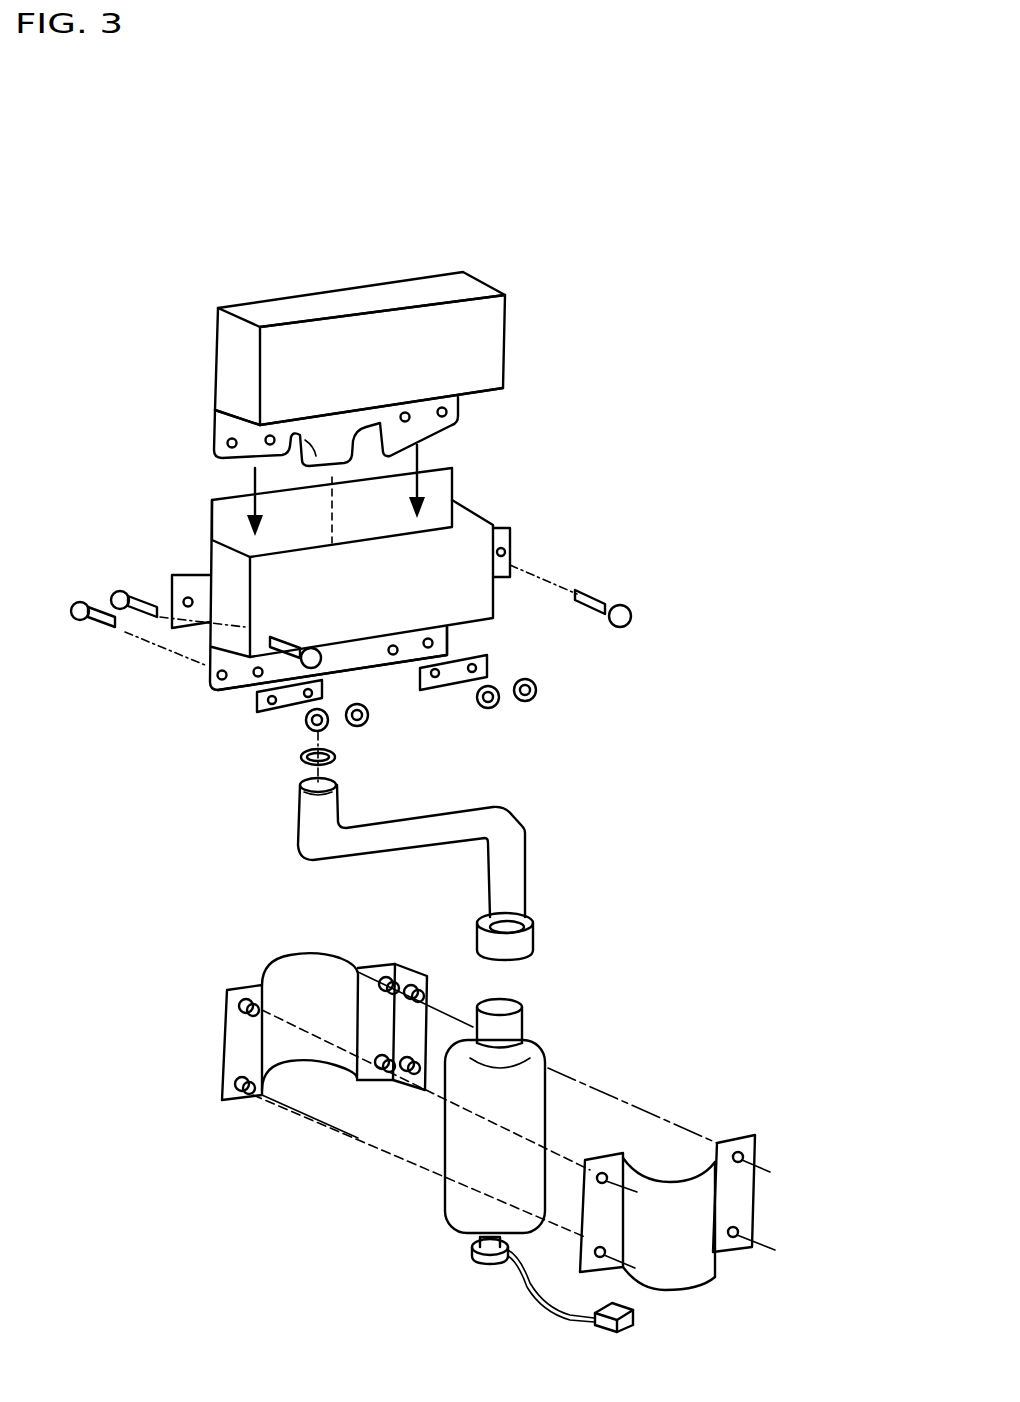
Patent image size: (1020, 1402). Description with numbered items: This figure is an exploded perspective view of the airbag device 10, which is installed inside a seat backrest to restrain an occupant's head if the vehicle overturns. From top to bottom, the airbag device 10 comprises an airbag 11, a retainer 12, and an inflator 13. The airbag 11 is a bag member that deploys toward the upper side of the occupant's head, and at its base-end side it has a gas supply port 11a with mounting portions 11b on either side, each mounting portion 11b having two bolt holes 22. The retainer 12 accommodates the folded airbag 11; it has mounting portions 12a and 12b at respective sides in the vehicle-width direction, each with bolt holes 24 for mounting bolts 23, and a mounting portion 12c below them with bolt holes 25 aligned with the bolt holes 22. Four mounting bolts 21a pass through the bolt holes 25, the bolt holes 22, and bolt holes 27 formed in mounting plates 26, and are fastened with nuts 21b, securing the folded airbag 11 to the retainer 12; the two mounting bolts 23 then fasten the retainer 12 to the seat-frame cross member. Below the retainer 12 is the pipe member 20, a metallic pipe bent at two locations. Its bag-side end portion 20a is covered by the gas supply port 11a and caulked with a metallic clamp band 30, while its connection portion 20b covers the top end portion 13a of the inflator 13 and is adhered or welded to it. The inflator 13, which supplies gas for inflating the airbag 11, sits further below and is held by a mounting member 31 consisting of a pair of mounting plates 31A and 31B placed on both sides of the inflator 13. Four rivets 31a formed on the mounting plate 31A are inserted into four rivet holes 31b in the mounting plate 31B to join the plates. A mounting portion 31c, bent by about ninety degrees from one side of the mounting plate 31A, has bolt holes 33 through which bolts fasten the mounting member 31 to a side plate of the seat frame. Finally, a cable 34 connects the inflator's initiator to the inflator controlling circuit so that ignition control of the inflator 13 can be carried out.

The airbag device 10 is at (632, 392).
The airbag 11 is at (344, 339).
The gas supply port 11a is at (354, 422).
The mounting portions 11b is at (222, 426).
The retainer 12 is at (375, 588).
The mounting portion 12a is at (199, 578).
The mounting portion 12b is at (512, 541).
The mounting portion 12c is at (452, 630).
The inflator 13 is at (555, 1116).
The top end portion 13a is at (569, 1023).
The pipe member 20 is at (445, 869).
The bag-side end portion 20a is at (300, 822).
The connection portion 20b is at (536, 932).
The mounting bolts 21a is at (83, 601).
The nuts 21b is at (333, 733).
The bolt holes 22 is at (267, 446).
The mounting bolts 23 is at (276, 640).
The bolt holes 24 is at (184, 598).
The bolt holes 25 is at (256, 677).
The mounting plates 26 is at (489, 661).
The bolt holes 27 is at (348, 720).
The clamp band 30 is at (305, 757).
The mounting member 31 is at (480, 1128).
The mounting plate 31A is at (288, 955).
The mounting plate 31B is at (684, 1263).
The rivets 31a is at (227, 996).
The rivet holes 31b is at (742, 1163).
The mounting portion 31c is at (413, 966).
The bolt holes 33 is at (428, 992).
The cable 34 is at (542, 1304).